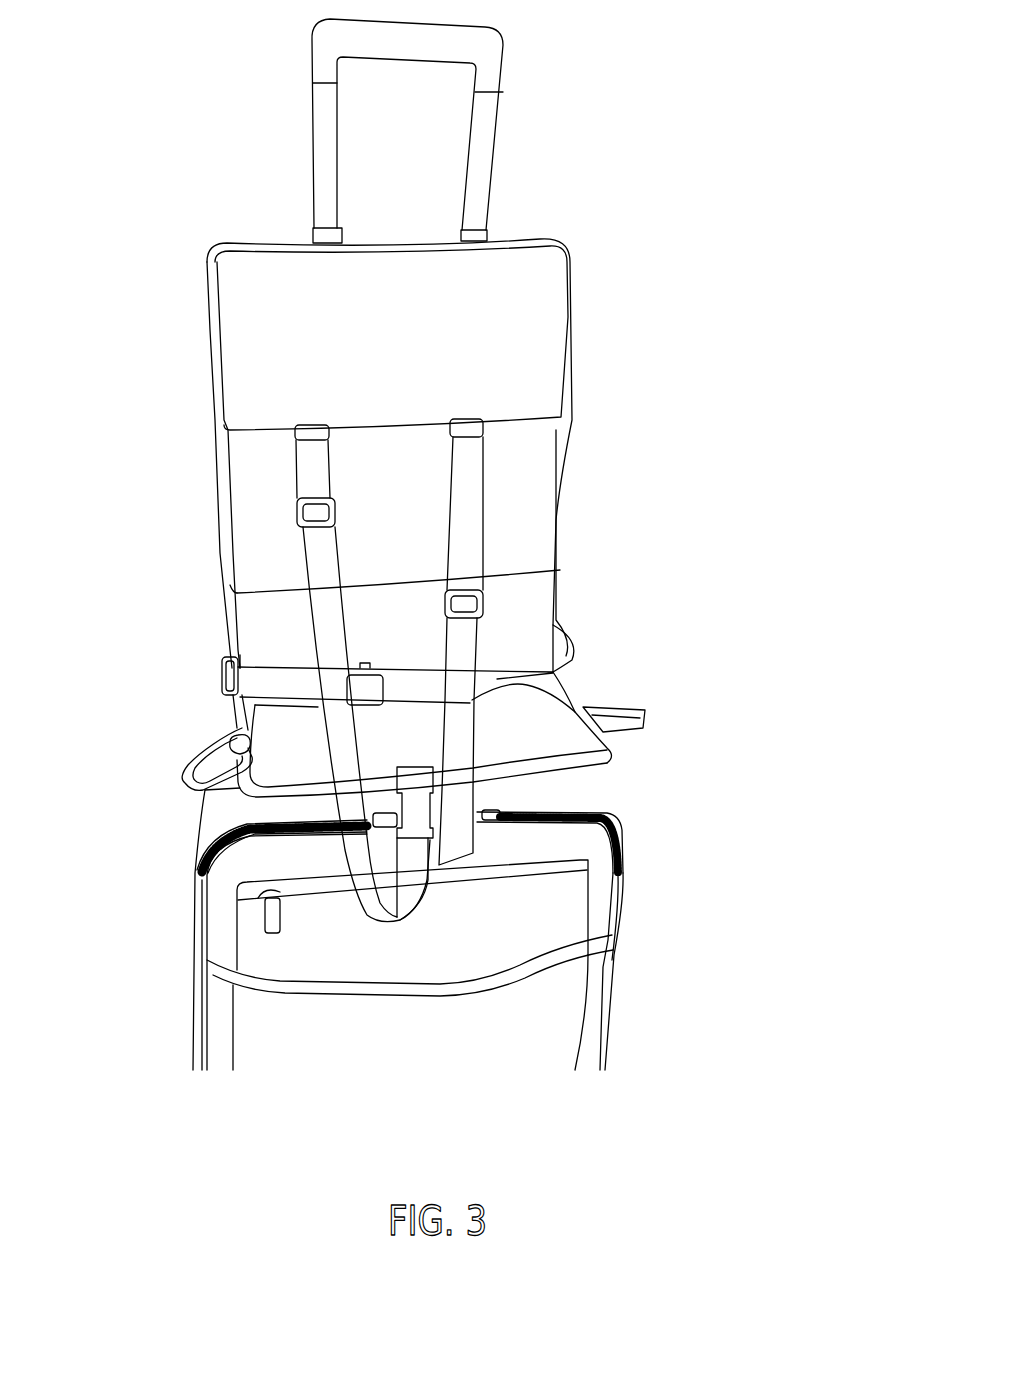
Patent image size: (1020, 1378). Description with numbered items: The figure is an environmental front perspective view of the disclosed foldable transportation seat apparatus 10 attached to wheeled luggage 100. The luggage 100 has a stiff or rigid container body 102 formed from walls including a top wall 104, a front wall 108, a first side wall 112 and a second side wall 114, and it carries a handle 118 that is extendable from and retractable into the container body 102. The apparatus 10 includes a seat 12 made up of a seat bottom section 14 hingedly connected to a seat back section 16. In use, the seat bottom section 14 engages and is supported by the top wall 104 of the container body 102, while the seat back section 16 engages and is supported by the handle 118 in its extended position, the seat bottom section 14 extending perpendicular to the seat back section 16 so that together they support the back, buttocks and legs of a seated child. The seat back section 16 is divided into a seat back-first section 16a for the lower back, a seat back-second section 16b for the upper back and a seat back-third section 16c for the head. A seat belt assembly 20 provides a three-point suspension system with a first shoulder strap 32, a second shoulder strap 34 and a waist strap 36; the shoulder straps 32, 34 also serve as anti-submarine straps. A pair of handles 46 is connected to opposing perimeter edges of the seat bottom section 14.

The apparatus 10 is at (662, 287).
The seat 12 is at (215, 330).
The seat bottom section 14 is at (617, 755).
The seat back section 16 is at (232, 473).
The seat back-first section 16a is at (560, 610).
The seat back-second section 16b is at (560, 538).
The seat back-third section 16c is at (572, 355).
The seat belt assembly 20 is at (580, 470).
The first shoulder strap 32 is at (318, 555).
The second shoulder strap 34 is at (465, 638).
The waist strap 36 is at (493, 680).
The handle 46 is at (183, 772).
The luggage 100 is at (704, 866).
The container body 102 is at (205, 890).
The top wall 104 is at (253, 822).
The front wall 108 is at (398, 1010).
The first side wall 112 is at (243, 955).
The second side wall 114 is at (618, 958).
The handle 118 is at (497, 123).